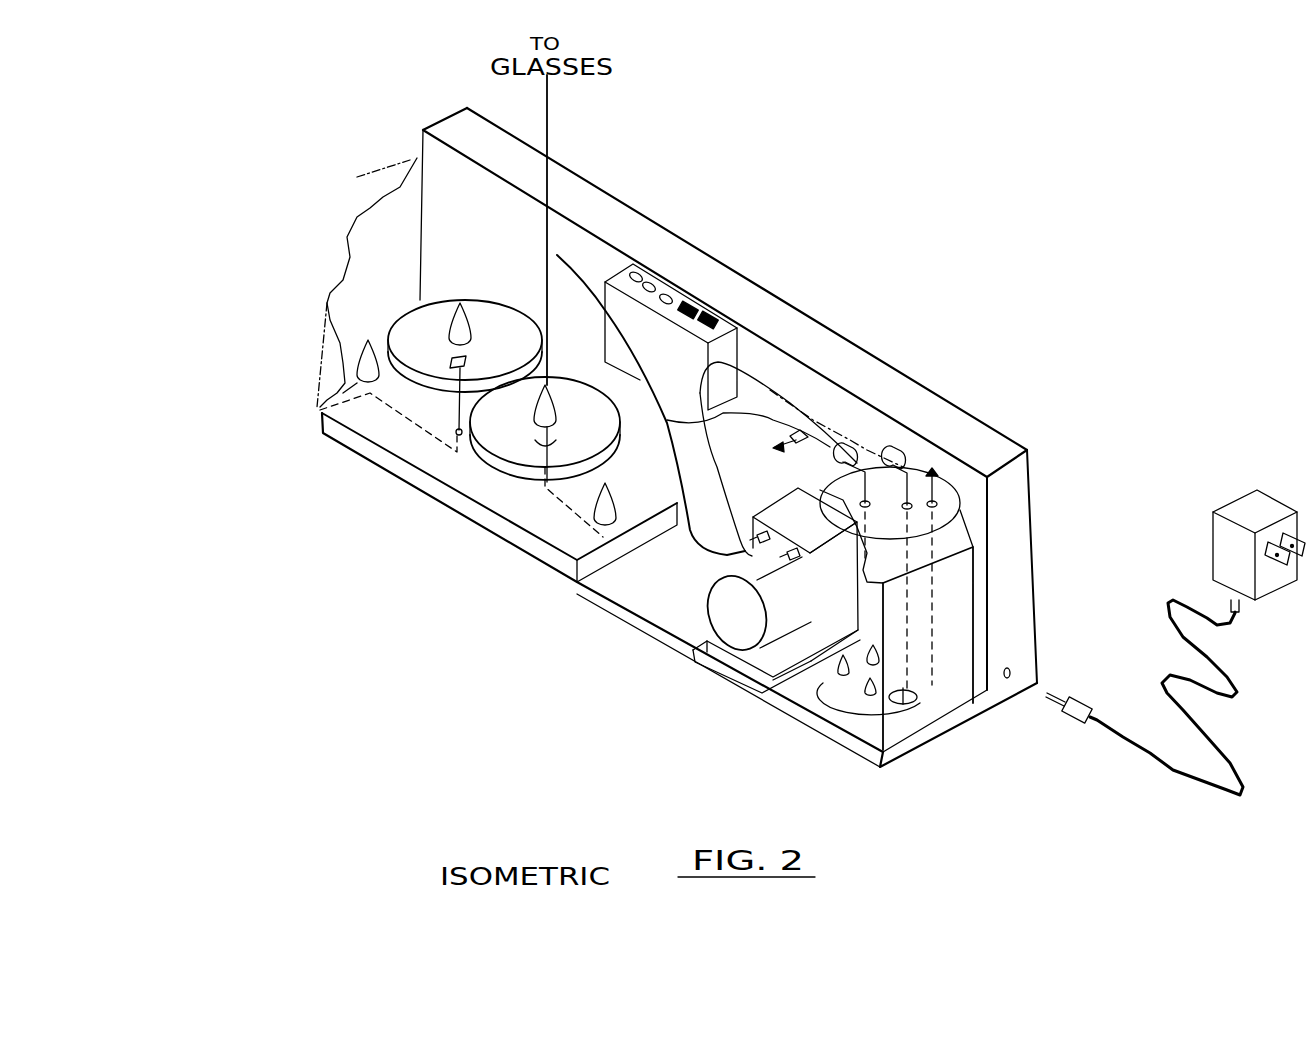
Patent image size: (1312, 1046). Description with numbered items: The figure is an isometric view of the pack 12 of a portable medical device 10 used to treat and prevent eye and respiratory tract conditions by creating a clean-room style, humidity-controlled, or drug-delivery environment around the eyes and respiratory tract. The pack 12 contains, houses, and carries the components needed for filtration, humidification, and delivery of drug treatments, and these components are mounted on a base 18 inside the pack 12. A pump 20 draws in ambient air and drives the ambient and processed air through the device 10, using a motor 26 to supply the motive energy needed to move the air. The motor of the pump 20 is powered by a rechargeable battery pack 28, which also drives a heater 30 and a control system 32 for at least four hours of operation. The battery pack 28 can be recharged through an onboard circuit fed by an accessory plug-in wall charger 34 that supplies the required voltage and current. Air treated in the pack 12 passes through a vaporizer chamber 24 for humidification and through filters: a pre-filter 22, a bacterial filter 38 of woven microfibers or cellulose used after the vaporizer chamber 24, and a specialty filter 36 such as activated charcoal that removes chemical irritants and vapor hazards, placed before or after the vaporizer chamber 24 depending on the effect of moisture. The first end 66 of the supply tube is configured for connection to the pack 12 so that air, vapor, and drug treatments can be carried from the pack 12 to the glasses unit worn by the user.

The medical device 10 is at (765, 125).
The pack 12 is at (446, 110).
The base 18 is at (456, 519).
The pump 20 is at (782, 512).
The pre-filter 22 is at (402, 183).
The vaporizer chamber 24 is at (930, 733).
The motor 26 is at (727, 612).
The battery pack 28 is at (749, 280).
The heater 30 is at (862, 700).
The control system 32 is at (686, 288).
The plug-in wall charger 34 is at (1272, 483).
The specialty filter 36 is at (570, 383).
The bacterial filter 38 is at (435, 298).
The first end 66 is at (562, 186).